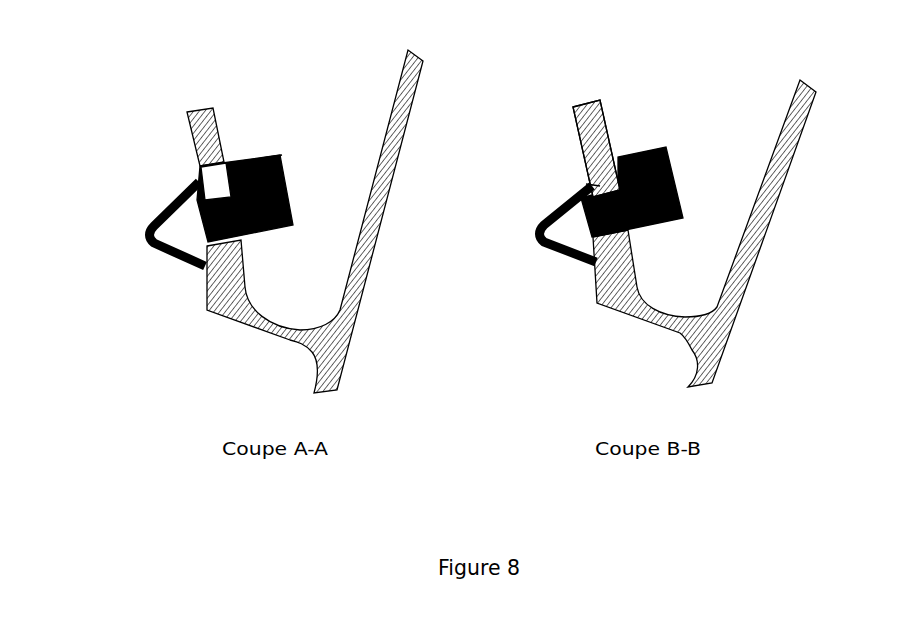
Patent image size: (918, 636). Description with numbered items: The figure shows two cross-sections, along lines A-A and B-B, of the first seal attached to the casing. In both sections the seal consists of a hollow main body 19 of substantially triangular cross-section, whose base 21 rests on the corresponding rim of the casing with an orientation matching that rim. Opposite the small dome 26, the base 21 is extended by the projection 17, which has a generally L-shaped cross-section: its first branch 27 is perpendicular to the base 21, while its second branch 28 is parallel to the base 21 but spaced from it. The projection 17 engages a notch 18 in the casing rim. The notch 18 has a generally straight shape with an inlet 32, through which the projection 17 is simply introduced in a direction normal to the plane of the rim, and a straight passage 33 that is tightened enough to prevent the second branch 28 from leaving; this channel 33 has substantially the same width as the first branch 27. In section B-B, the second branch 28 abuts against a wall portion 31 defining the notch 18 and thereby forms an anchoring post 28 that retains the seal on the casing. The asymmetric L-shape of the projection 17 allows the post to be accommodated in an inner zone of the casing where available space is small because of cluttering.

The projection 17 is at (296, 179).
The notch 18 is at (203, 170).
The hollow main body 19 is at (141, 237).
The base 21 is at (222, 254).
The small dome 26 is at (158, 218).
The first branch 27 is at (245, 232).
The second branch 28 is at (283, 155).
The wall portion 31 is at (599, 180).
The inlet 32 is at (229, 162).
The straight passage 33 is at (600, 187).